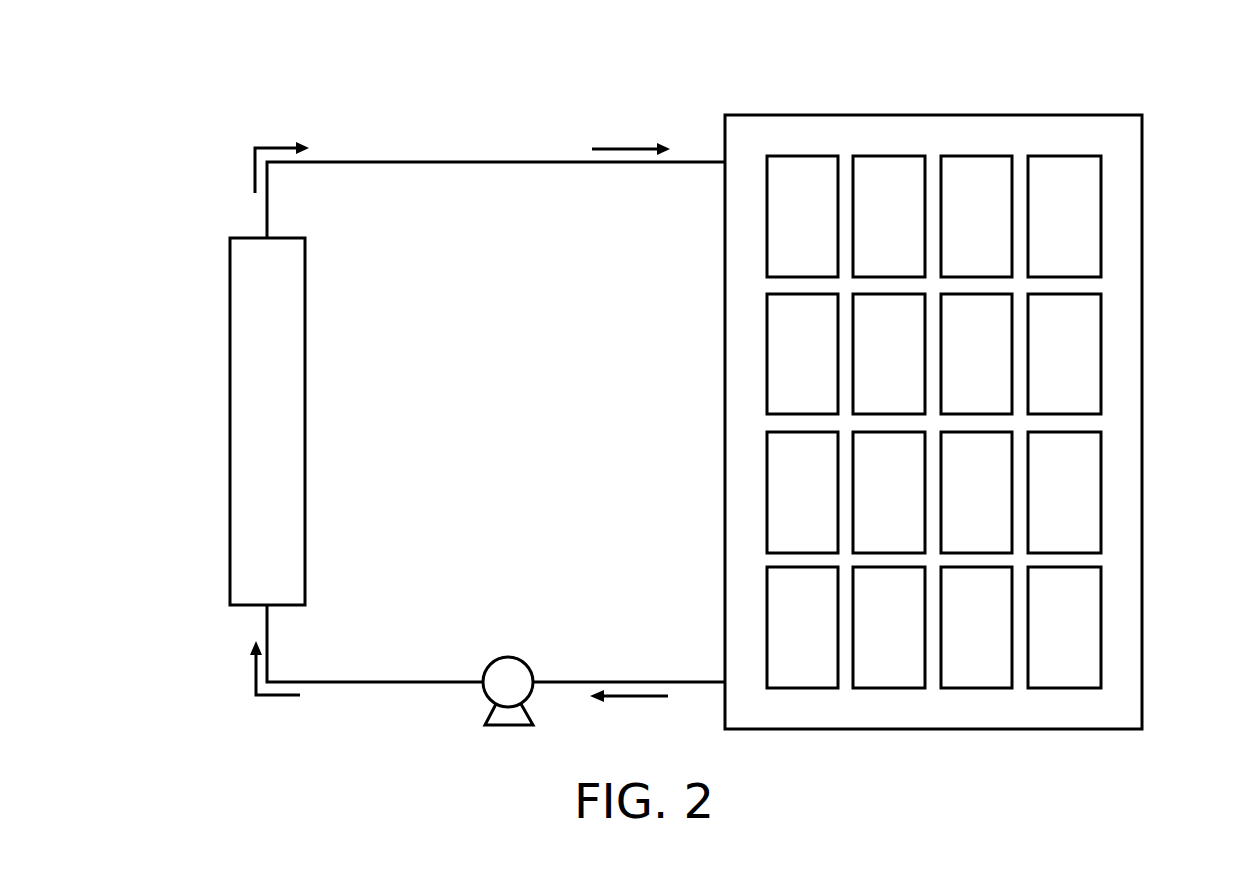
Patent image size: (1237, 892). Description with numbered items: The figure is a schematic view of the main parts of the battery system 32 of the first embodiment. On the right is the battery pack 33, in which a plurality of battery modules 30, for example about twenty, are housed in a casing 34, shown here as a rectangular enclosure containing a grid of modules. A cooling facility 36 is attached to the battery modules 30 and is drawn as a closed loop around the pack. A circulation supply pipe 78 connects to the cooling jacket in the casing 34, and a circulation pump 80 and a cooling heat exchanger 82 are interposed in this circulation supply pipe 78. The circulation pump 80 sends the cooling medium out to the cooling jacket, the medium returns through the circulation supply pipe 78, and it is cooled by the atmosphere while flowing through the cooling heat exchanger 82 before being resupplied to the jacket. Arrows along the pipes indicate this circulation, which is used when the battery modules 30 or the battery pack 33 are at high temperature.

The battery module 30 is at (905, 528).
The battery system 32 is at (412, 75).
The battery pack 33 is at (981, 417).
The casing 34 is at (1143, 198).
The cooling facility 36 is at (529, 148).
The circulation supply pipe 78 is at (640, 681).
The circulation pump 80 is at (518, 657).
The cooling heat exchanger 82 is at (243, 345).